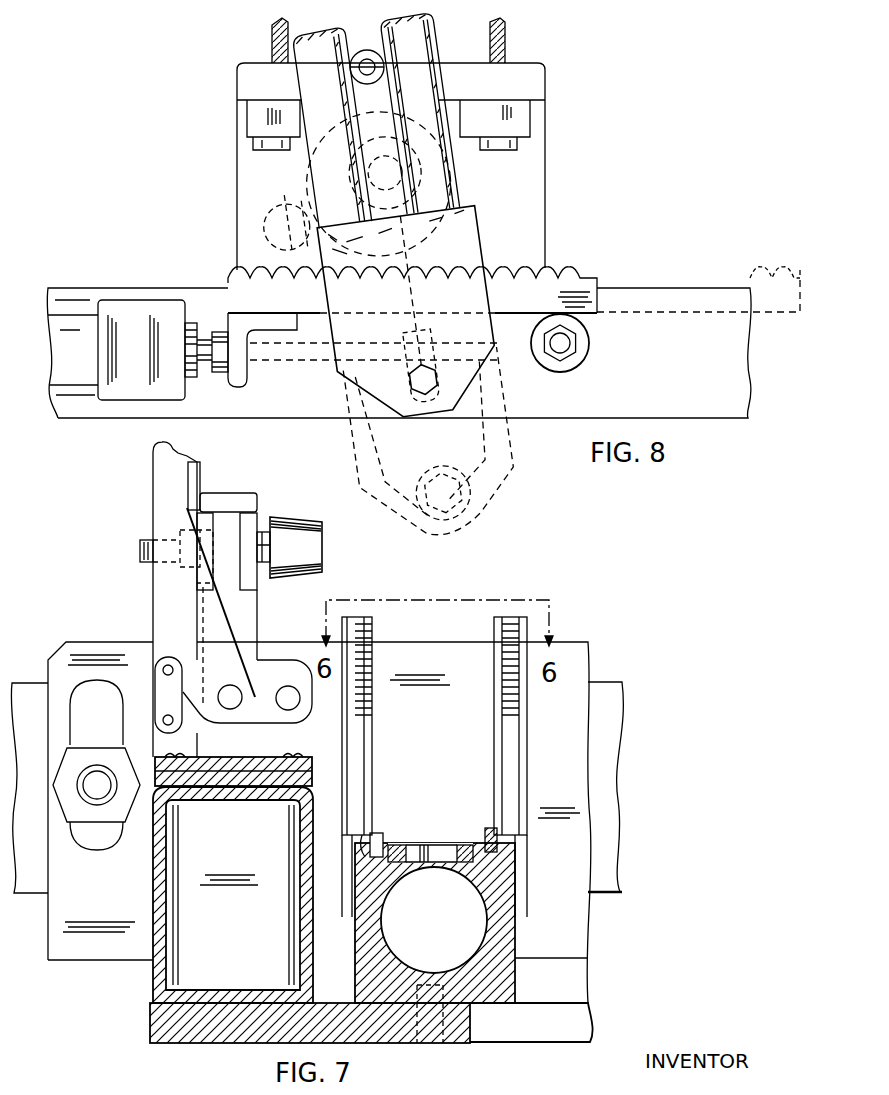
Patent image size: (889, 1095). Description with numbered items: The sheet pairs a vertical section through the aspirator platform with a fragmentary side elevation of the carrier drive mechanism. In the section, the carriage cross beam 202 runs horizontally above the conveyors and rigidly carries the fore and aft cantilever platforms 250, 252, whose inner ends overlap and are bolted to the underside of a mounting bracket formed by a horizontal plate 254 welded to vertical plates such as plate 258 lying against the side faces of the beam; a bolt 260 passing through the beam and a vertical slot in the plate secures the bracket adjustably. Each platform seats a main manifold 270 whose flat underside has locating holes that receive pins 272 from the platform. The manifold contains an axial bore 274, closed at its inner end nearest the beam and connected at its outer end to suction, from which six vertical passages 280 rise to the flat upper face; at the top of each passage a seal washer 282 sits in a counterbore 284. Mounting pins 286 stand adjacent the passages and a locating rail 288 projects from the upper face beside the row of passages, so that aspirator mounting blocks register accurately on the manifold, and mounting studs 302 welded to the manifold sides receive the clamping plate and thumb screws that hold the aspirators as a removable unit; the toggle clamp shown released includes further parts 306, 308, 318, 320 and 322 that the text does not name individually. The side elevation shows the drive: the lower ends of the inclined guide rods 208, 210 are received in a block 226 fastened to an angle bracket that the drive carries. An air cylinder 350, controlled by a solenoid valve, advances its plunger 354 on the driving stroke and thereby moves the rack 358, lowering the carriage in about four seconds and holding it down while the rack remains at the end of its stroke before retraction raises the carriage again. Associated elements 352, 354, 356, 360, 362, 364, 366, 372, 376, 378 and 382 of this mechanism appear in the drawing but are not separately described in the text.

In FIG. 7, the cross beam 202 is at (622, 700).
In FIG. 8, the guide rod 208 is at (300, 50).
In FIG. 8, the guide rod 210 is at (432, 36).
In FIG. 8, the block 226 is at (486, 219).
In FIG. 7, the cantilever platform 250 is at (580, 1022).
In FIG. 7, the cantilever platform 252 is at (155, 1035).
In FIG. 7, the horizontal plate 254 is at (565, 985).
In FIG. 7, the vertical plate 258 is at (68, 958).
In FIG. 7, the bolt 260 is at (83, 822).
In FIG. 7, the main manifold 270 is at (515, 945).
In FIG. 7, the pin 272 is at (448, 1050).
In FIG. 7, the axial bore 274 is at (472, 905).
In FIG. 7, the passage 280 is at (425, 843).
In FIG. 7, the seal washer 282 is at (395, 843).
In FIG. 7, the counterbore 284 is at (455, 843).
In FIG. 7, the mounting pin 286 is at (375, 833).
In FIG. 7, the locating rail 288 is at (495, 838).
In FIG. 7, the mounting stud 302 is at (352, 617).
In FIG. 7, the link 306 is at (148, 593).
In FIG. 7, the channel 308 is at (230, 745).
In FIG. 7, the plate 318 is at (165, 495).
In FIG. 7, the bracket 320 is at (232, 500).
In FIG. 7, the knob 322 is at (322, 543).
In FIG. 8, the air cylinder 350 is at (72, 318).
In FIG. 8, the slide bar 352 is at (748, 385).
In FIG. 8, the plunger 354 is at (218, 335).
In FIG. 8, the bracket 356 is at (241, 383).
In FIG. 8, the rack 358 is at (228, 268).
In FIG. 8, the bolt 360 is at (589, 345).
In FIG. 8, the nut 362 is at (560, 355).
In FIG. 8, the gear 364 is at (485, 174).
In FIG. 8, the right rail 366 is at (415, 114).
In FIG. 8, the left rail 372 is at (315, 130).
In FIG. 8, the pin 376 is at (367, 58).
In FIG. 8, the arm 378 is at (352, 444).
In FIG. 8, the bolt 382 is at (437, 387).